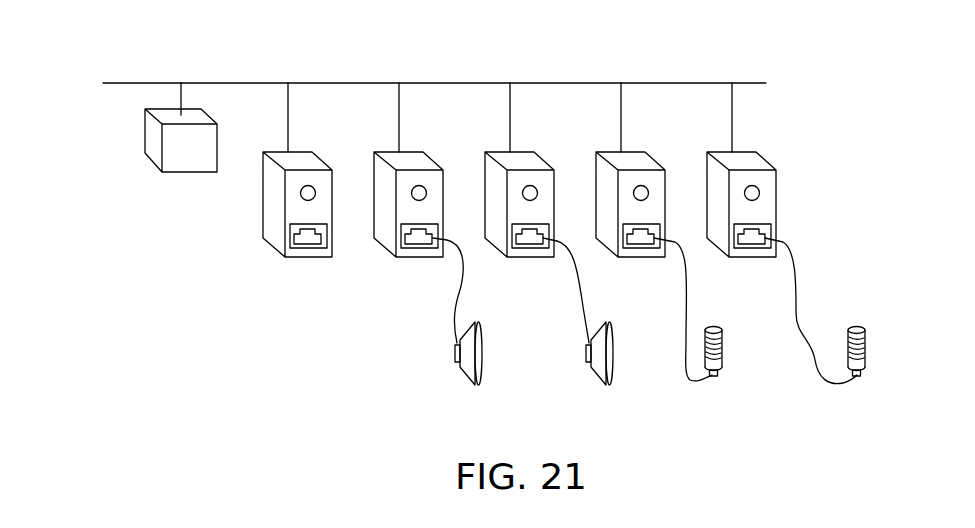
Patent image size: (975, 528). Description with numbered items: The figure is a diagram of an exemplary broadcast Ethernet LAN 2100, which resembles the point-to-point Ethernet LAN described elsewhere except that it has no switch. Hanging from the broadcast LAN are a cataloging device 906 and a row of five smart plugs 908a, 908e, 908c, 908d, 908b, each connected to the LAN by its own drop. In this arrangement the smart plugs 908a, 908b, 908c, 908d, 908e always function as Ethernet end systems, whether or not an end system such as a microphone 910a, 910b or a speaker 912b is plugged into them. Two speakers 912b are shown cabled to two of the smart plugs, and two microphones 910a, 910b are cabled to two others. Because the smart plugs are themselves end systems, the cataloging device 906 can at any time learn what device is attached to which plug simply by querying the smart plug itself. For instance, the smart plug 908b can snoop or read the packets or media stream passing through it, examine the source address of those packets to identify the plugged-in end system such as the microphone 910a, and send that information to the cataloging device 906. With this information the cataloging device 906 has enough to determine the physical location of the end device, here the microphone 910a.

The broadcast Ethernet LAN 2100 is at (291, 53).
The cataloging device 906 is at (145, 134).
The smart plug 908a is at (285, 150).
The smart plug 908b is at (729, 150).
The smart plug 908c is at (507, 150).
The smart plug 908d is at (618, 150).
The smart plug 908e is at (396, 150).
The speaker 912b is at (452, 350).
The microphone 910a is at (722, 348).
The microphone 910b is at (866, 348).